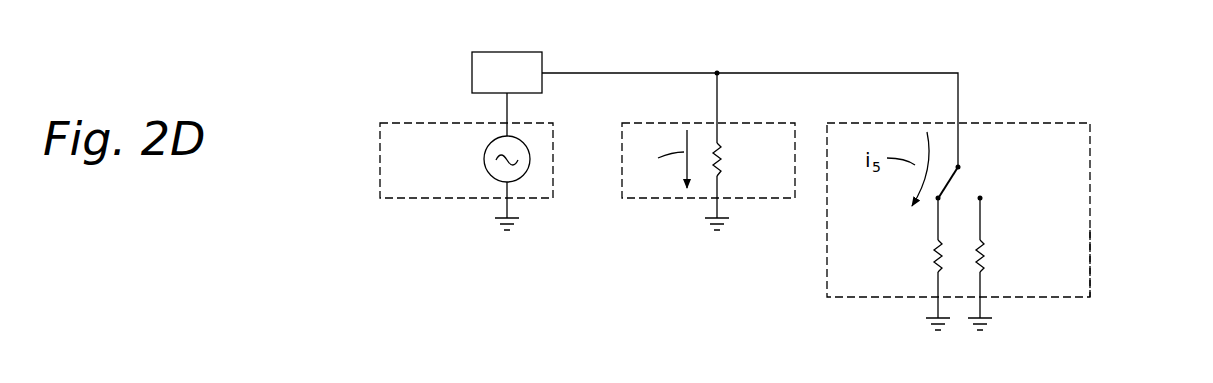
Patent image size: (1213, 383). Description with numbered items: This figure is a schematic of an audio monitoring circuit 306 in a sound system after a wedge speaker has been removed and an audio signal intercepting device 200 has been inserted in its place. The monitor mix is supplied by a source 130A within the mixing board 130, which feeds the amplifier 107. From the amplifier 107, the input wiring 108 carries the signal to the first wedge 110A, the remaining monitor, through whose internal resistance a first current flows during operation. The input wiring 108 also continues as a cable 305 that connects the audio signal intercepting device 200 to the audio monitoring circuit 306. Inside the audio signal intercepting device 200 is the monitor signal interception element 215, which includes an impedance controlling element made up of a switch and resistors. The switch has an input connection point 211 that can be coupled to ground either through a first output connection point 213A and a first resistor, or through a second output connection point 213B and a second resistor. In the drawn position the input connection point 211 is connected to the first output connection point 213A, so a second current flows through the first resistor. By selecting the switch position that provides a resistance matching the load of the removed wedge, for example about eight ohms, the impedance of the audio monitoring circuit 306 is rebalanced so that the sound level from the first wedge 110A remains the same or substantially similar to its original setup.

The audio monitoring circuit 306 is at (352, 52).
The amplifier 107 is at (507, 72).
The input wiring 108 is at (595, 71).
The cable 305 is at (832, 71).
The mixing board 130 is at (410, 200).
The source 130A is at (484, 156).
The first wedge 110A is at (634, 200).
The audio signal intercepting device 200 is at (1010, 113).
The input connection point 211 is at (963, 168).
The first output connection point 213A is at (935, 201).
The second output connection point 213B is at (983, 198).
The monitor signal interception element 215 is at (1091, 263).